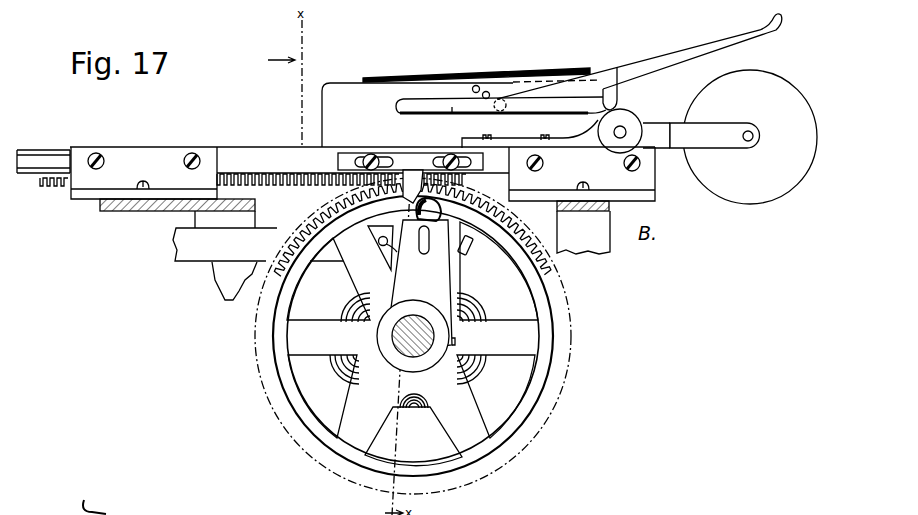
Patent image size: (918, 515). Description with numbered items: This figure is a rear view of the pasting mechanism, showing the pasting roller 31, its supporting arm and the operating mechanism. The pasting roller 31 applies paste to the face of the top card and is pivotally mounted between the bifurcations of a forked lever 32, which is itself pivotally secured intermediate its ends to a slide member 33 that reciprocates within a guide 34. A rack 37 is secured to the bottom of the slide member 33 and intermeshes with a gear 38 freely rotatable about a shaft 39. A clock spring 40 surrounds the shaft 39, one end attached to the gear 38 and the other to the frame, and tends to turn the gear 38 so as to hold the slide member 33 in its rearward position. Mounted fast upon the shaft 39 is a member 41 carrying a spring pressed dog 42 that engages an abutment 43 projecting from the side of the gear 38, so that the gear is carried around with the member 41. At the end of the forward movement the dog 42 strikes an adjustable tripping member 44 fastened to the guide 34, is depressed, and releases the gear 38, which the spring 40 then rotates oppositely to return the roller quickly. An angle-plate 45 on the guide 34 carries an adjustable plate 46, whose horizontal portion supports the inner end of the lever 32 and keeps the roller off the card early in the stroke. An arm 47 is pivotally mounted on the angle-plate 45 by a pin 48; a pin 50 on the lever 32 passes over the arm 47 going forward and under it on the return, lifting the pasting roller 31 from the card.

The pasting roller 31 is at (743, 137).
The forked lever 32 is at (452, 107).
The slide member 33 is at (46, 153).
The guide 34 is at (248, 154).
The rack 37 is at (298, 183).
The gear 38 is at (531, 268).
The shaft 39 is at (403, 355).
The clock spring 40 is at (477, 360).
The member 41 is at (420, 286).
The spring pressed dog 42 is at (440, 205).
The abutment 43 is at (466, 254).
The adjustable tripping member 44 is at (410, 163).
The angle-plate 45 is at (461, 113).
The plate 46 is at (521, 83).
The arm 47 is at (637, 64).
The pin 48 is at (490, 108).
The pin 50 is at (404, 108).